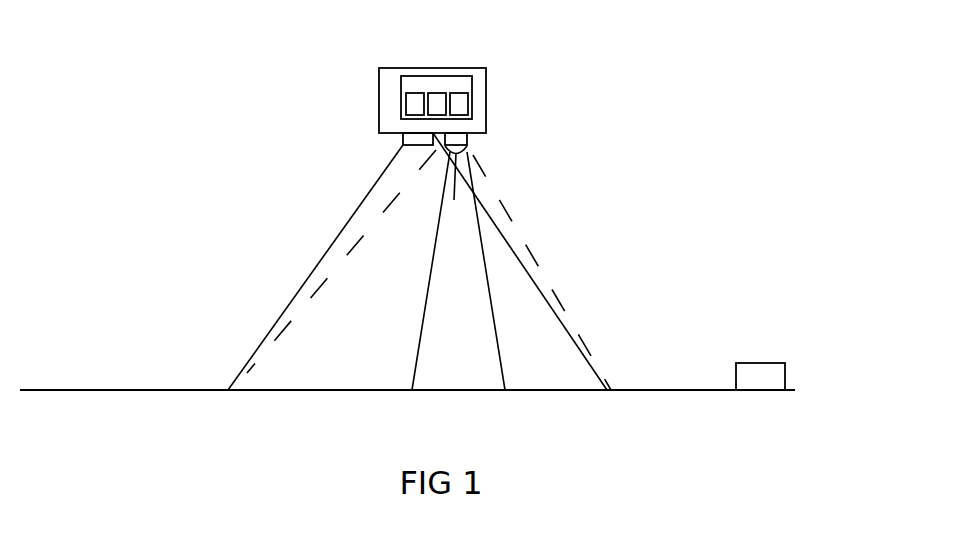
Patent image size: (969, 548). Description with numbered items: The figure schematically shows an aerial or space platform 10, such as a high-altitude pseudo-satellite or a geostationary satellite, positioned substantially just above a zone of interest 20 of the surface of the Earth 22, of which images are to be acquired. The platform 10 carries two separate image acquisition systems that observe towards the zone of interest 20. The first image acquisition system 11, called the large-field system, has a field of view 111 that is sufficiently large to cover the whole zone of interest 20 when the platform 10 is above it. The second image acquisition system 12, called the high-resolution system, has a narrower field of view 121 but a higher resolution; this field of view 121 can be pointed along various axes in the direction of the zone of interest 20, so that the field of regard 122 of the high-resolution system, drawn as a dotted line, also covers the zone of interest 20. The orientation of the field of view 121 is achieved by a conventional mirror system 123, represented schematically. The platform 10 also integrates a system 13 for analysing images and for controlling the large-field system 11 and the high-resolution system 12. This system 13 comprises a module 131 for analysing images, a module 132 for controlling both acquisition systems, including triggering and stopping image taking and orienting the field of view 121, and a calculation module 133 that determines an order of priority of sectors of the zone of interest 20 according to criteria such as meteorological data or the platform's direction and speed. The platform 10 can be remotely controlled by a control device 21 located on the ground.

The aerial or space platform 10 is at (470, 65).
The first image acquisition system 11 is at (403, 140).
The second image acquisition system 12 is at (467, 137).
The system for analysing images and for controlling 13 is at (413, 76).
The module for analysing images 131 is at (406, 104).
The module for controlling 132 is at (433, 93).
The calculation module 133 is at (468, 104).
The field of view 111 is at (385, 193).
The field of view 121 is at (462, 175).
The field of regard 122 is at (493, 212).
The mirror system 123 is at (454, 200).
The zone of interest 20 is at (357, 390).
The control device 21 is at (762, 362).
The surface of the Earth 22 is at (105, 390).